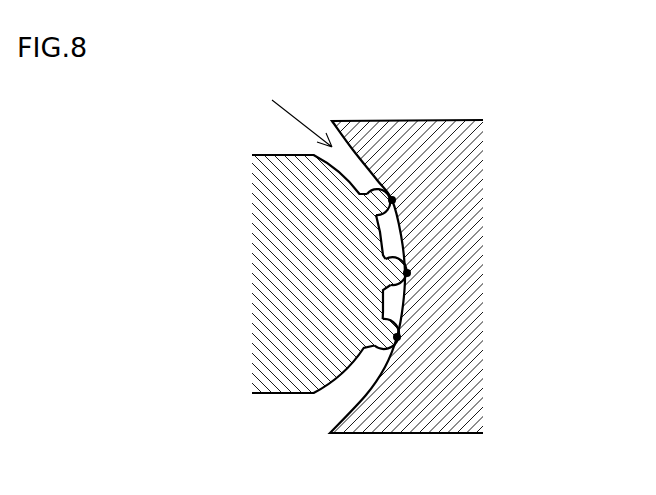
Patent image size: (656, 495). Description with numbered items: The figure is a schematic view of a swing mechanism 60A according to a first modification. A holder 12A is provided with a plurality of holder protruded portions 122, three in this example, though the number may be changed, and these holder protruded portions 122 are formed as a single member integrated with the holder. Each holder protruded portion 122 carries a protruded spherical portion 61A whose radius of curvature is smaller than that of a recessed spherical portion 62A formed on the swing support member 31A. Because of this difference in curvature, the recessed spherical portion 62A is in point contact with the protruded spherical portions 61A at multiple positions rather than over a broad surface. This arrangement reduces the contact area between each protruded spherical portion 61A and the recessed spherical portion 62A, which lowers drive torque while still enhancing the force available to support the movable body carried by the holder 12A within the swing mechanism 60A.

The holder 12A is at (267, 330).
The holder protruded portions 122 is at (386, 325).
The swing support member 31A is at (482, 150).
The protruded spherical portion 61A is at (386, 188).
The recessed spherical portion 62A is at (368, 395).
The swing mechanism 60A is at (274, 112).